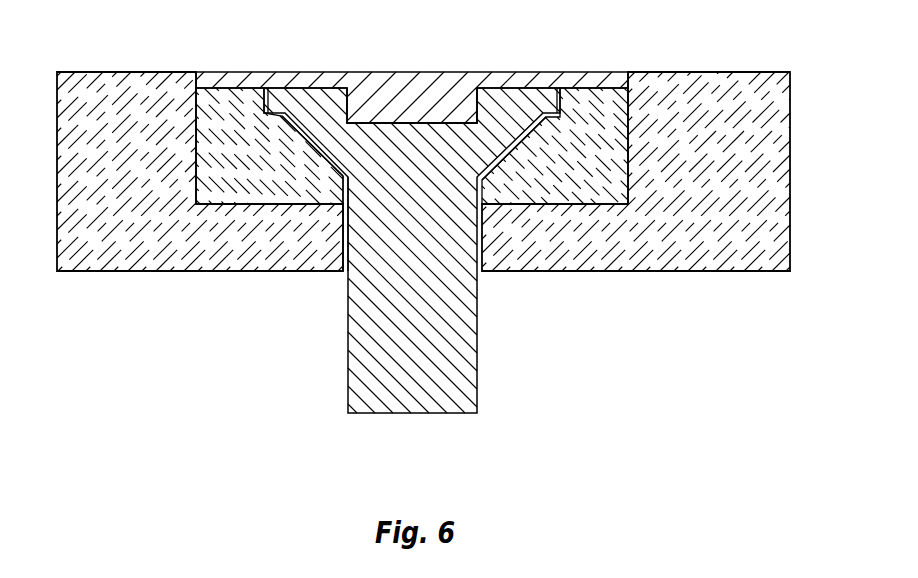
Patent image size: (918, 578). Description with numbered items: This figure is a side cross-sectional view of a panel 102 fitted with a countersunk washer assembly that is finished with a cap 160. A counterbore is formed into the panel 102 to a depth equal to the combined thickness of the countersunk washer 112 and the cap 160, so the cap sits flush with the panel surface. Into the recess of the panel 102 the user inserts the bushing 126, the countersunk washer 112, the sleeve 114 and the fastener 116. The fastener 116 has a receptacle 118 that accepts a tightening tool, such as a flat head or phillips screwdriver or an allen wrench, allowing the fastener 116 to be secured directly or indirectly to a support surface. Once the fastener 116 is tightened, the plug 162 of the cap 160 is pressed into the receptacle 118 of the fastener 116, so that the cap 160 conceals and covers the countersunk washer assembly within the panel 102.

The panel 102 is at (790, 140).
The countersunk washer 112 is at (610, 92).
The sleeve 114 is at (318, 152).
The fastener 116 is at (467, 367).
The receptacle 118 is at (429, 130).
The bushing 126 is at (338, 253).
The cap 160 is at (296, 72).
The plug 162 is at (415, 108).